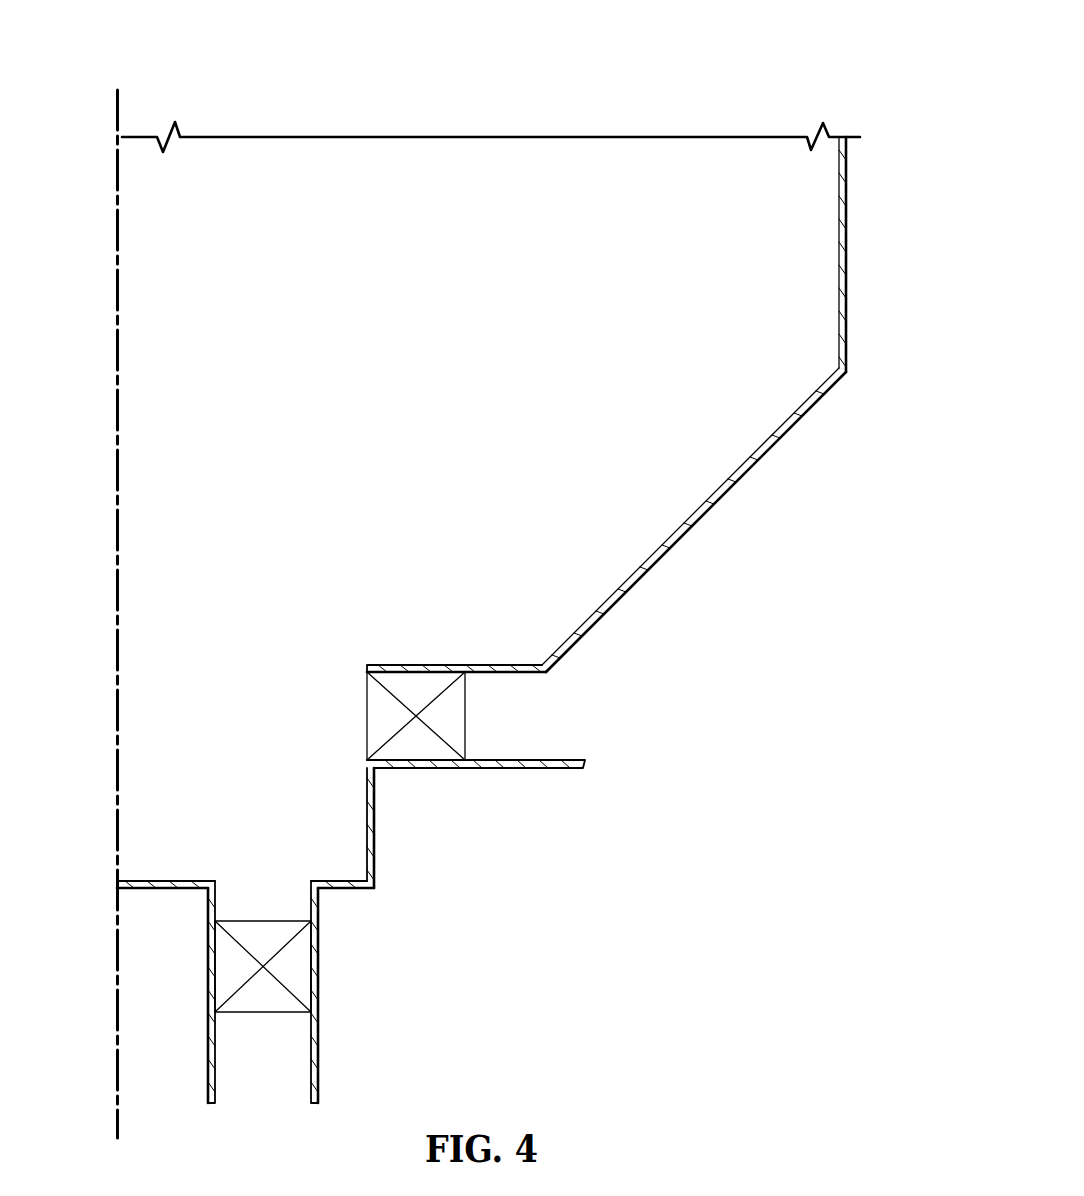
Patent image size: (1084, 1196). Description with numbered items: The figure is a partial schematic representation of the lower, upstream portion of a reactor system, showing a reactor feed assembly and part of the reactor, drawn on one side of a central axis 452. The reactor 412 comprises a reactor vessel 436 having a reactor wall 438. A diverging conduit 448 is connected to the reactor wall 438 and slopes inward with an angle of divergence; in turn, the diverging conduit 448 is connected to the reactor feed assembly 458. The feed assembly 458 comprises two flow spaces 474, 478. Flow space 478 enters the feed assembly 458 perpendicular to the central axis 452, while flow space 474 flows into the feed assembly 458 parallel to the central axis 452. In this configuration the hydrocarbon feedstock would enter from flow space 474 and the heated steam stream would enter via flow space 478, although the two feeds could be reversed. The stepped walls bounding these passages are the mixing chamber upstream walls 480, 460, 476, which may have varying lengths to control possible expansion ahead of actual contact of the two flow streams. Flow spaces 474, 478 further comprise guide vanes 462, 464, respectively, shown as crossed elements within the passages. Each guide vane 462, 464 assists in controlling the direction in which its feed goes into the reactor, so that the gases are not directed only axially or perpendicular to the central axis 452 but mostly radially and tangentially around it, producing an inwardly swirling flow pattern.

The reactor 412 is at (321, 92).
The reactor vessel 436 is at (877, 223).
The reactor wall 438 is at (847, 282).
The diverging conduit 448 is at (730, 510).
The central axis 452 is at (116, 542).
The reactor feed assembly 458 is at (441, 885).
The mixing chamber upstream wall 460 is at (345, 890).
The guide vane 462 is at (265, 930).
The guide vane 464 is at (370, 715).
The flow space 474 is at (283, 1074).
The mixing chamber upstream wall 476 is at (375, 822).
The flow space 478 is at (537, 733).
The mixing chamber upstream wall 480 is at (163, 858).